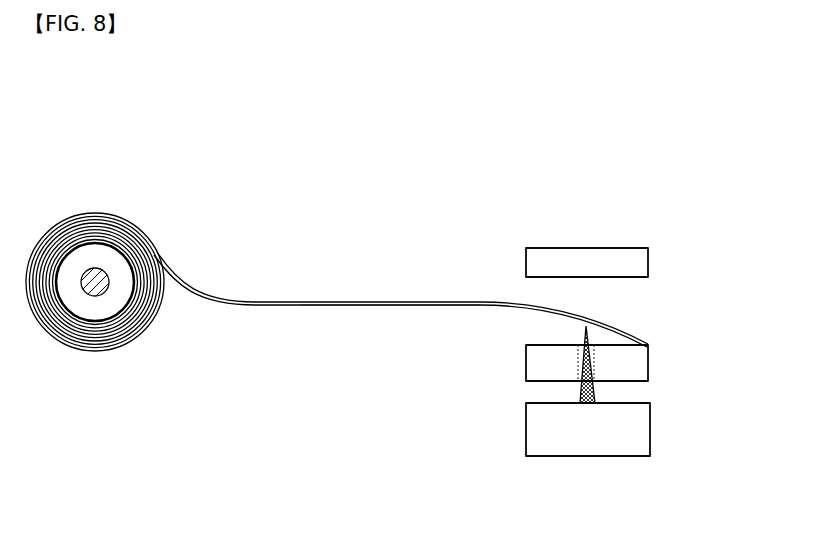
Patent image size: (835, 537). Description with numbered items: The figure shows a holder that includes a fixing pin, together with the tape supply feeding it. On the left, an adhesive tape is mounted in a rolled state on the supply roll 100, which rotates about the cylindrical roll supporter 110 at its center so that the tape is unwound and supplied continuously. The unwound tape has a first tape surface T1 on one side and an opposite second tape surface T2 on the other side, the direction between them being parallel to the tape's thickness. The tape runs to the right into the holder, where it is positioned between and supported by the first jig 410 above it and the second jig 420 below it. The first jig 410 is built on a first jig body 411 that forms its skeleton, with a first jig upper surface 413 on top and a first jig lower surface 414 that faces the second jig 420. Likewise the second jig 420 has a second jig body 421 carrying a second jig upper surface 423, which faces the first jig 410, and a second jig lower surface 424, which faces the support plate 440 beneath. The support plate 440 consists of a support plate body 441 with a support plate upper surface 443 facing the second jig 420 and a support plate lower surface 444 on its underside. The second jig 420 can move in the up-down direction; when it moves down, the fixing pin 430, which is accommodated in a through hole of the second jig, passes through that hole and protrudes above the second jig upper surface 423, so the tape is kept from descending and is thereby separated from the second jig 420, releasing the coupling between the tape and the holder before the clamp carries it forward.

The supply roll 100 is at (73, 162).
The roll supporter 110 is at (96, 268).
The first tape surface T1 is at (240, 302).
The second tape surface T2 is at (295, 306).
The first jig 410 is at (666, 262).
The first jig body 411 is at (559, 257).
The first jig upper surface 413 is at (618, 248).
The first jig lower surface 414 is at (620, 277).
The second jig 420 is at (666, 367).
The second jig body 421 is at (641, 359).
The second jig upper surface 423 is at (535, 345).
The second jig lower surface 424 is at (538, 382).
The fixing pin 430 is at (582, 392).
The support plate 440 is at (668, 438).
The support plate body 441 is at (595, 432).
The support plate upper surface 443 is at (625, 403).
The support plate lower surface 444 is at (563, 456).